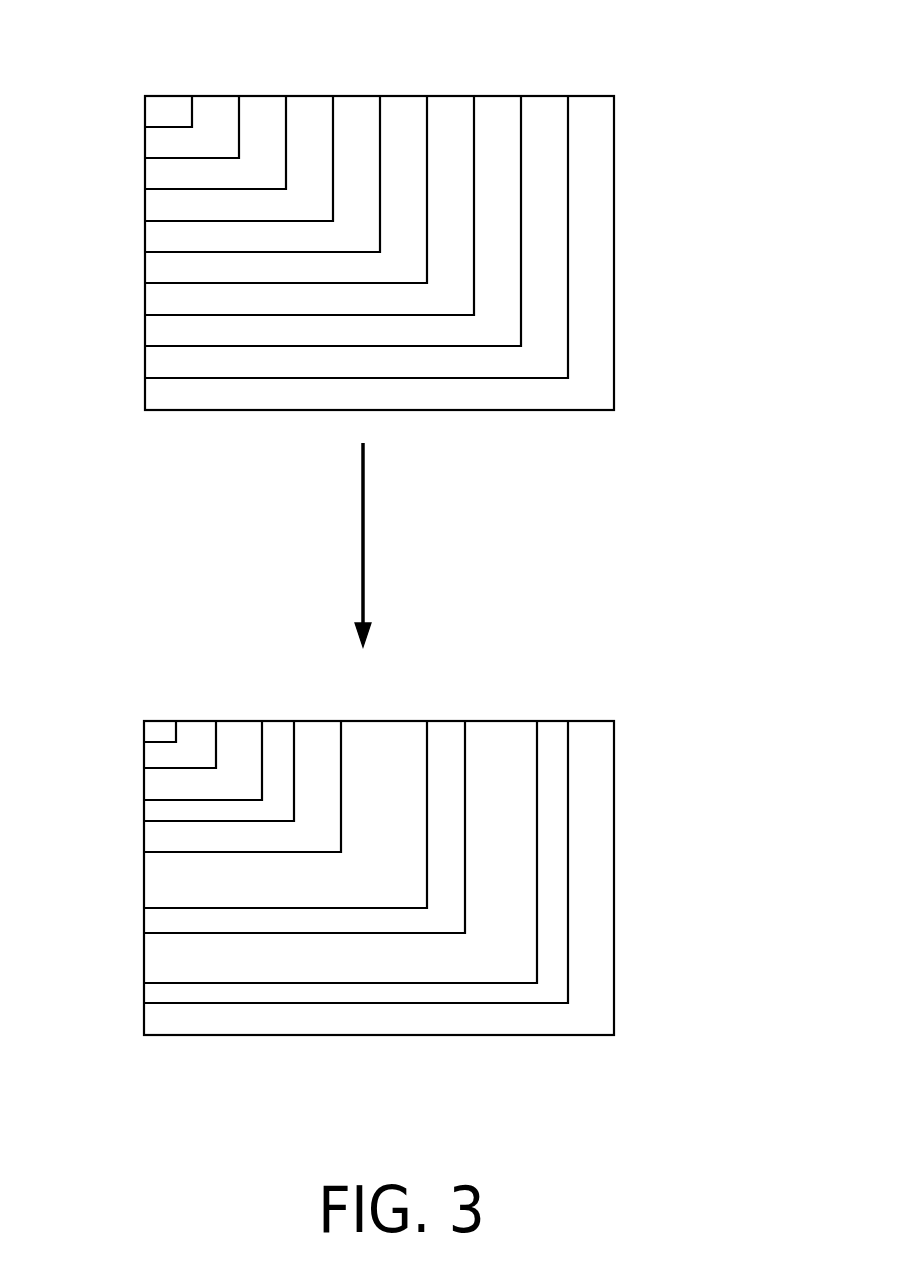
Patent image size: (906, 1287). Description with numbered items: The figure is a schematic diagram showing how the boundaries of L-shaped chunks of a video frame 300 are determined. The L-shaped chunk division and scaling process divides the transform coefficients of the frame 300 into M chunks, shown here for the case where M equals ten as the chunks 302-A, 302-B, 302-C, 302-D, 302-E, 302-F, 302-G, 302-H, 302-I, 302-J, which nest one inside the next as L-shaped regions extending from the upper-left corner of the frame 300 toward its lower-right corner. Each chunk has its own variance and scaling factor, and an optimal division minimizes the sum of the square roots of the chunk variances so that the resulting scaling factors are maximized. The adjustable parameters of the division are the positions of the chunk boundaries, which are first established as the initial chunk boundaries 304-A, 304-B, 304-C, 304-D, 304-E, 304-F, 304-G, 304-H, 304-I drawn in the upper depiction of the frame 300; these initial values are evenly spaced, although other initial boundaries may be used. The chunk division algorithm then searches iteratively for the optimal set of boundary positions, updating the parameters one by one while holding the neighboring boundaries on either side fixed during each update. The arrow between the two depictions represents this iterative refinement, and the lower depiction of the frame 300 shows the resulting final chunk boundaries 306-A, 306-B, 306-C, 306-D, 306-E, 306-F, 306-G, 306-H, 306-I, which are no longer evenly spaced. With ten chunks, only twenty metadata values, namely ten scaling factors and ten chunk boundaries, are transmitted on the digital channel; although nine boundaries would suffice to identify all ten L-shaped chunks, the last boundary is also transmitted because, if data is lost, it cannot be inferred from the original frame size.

The video frame 300 is at (107, 69).
The chunk 302-A is at (168, 111).
The chunk 302-B is at (168, 139).
The chunk 302-C is at (168, 170).
The chunk 302-D is at (168, 202).
The chunk 302-E is at (168, 235).
The chunk 302-F is at (168, 266).
The chunk 302-G is at (168, 298).
The chunk 302-H is at (168, 329).
The chunk 302-I is at (168, 361).
The chunk 302-J is at (168, 393).
The initial chunk boundary 304-A is at (192, 96).
The initial chunk boundary 304-B is at (239, 96).
The initial chunk boundary 304-C is at (288, 96).
The initial chunk boundary 304-D is at (340, 96).
The initial chunk boundary 304-E is at (380, 138).
The initial chunk boundary 304-F is at (427, 189).
The initial chunk boundary 304-G is at (477, 248).
The initial chunk boundary 304-H is at (521, 293).
The initial chunk boundary 304-I is at (583, 357).
The final chunk boundary 306-A is at (176, 721).
The final chunk boundary 306-B is at (217, 721).
The final chunk boundary 306-C is at (264, 721).
The final chunk boundary 306-D is at (297, 721).
The final chunk boundary 306-E is at (342, 754).
The final chunk boundary 306-F is at (428, 820).
The final chunk boundary 306-G is at (465, 873).
The final chunk boundary 306-H is at (537, 923).
The final chunk boundary 306-I is at (568, 960).